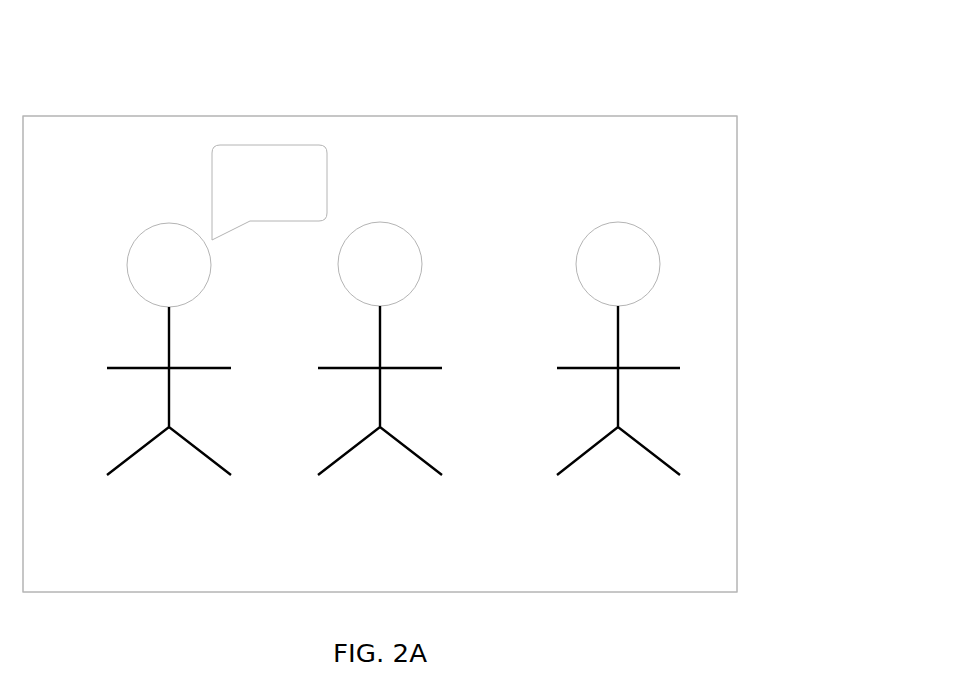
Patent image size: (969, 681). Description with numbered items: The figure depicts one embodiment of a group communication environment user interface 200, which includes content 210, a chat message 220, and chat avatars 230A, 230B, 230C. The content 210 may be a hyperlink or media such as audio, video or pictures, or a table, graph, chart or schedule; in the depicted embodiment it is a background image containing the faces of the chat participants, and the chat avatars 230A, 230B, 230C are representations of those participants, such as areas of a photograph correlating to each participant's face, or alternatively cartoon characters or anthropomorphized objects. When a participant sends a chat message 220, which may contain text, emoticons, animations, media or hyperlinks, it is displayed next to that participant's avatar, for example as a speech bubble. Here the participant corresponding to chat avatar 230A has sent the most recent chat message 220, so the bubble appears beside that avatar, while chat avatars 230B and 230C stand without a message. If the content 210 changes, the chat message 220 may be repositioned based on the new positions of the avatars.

The group communication environment user interface 200 is at (767, 90).
The content 210 is at (400, 578).
The chat message 220 is at (292, 198).
The chat avatar 230A is at (179, 300).
The chat avatar 230B is at (391, 300).
The chat avatar 230C is at (630, 301).